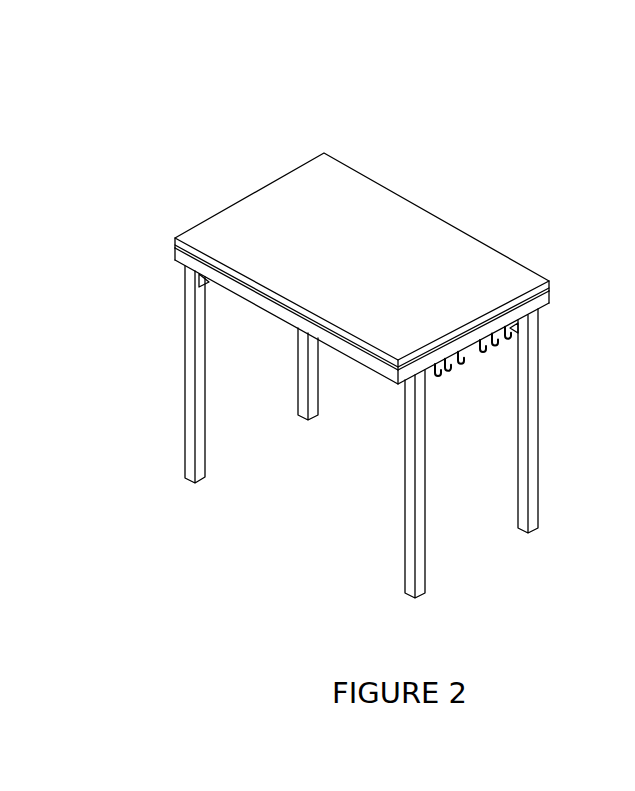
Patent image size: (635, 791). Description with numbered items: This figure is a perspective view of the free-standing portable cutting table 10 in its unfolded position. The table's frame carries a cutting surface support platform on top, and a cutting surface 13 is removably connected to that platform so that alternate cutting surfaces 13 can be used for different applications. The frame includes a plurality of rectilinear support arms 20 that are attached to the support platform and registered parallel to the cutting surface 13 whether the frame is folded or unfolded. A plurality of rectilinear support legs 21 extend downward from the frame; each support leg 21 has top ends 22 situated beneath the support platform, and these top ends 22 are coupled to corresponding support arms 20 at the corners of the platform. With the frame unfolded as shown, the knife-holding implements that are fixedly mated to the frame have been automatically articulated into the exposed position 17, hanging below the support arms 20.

The portable cutting table 10 is at (463, 179).
The cutting surface 13 is at (260, 232).
The exposed position 17 is at (472, 380).
The rectilinear support arms 20 is at (178, 245).
The rectilinear support legs 21 is at (309, 404).
The top ends 22 is at (192, 278).